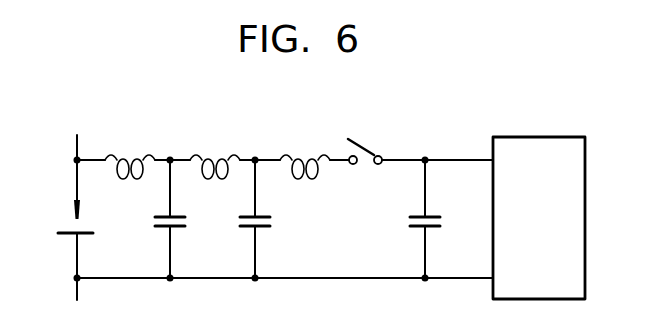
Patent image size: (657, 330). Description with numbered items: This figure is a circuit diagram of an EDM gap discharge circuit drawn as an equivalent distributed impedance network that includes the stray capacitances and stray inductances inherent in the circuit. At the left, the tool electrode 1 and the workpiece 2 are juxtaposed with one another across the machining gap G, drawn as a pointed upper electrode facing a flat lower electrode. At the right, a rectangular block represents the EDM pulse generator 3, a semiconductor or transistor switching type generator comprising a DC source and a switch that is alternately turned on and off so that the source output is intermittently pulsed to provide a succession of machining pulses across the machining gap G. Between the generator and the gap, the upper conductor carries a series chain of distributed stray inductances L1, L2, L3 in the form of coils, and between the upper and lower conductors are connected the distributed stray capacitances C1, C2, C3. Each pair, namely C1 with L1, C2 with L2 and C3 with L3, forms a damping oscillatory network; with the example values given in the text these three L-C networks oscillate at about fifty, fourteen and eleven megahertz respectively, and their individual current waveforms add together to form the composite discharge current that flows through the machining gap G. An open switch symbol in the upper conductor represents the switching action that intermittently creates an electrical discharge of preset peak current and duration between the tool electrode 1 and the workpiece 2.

The tool electrode 1 is at (71, 211).
The workpiece 2 is at (70, 235).
The EDM pulse generator 3 is at (585, 216).
The machining gap G is at (74, 227).
The distributed stray inductance L1 is at (130, 150).
The distributed stray inductance L2 is at (215, 150).
The distributed stray inductance L3 is at (305, 150).
The distributed stray capacitance C1 is at (187, 219).
The distributed stray capacitance C2 is at (269, 219).
The distributed stray capacitance C3 is at (439, 219).